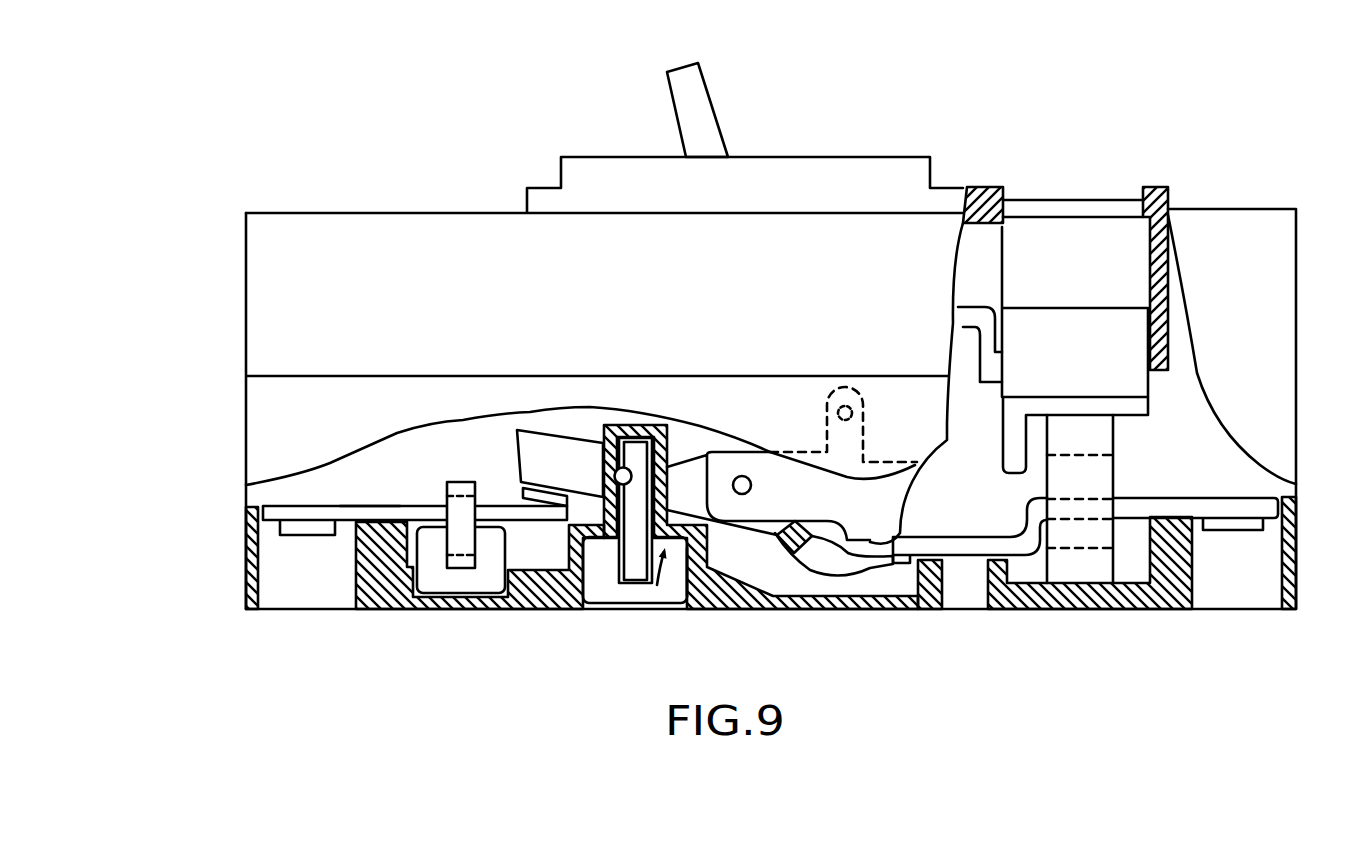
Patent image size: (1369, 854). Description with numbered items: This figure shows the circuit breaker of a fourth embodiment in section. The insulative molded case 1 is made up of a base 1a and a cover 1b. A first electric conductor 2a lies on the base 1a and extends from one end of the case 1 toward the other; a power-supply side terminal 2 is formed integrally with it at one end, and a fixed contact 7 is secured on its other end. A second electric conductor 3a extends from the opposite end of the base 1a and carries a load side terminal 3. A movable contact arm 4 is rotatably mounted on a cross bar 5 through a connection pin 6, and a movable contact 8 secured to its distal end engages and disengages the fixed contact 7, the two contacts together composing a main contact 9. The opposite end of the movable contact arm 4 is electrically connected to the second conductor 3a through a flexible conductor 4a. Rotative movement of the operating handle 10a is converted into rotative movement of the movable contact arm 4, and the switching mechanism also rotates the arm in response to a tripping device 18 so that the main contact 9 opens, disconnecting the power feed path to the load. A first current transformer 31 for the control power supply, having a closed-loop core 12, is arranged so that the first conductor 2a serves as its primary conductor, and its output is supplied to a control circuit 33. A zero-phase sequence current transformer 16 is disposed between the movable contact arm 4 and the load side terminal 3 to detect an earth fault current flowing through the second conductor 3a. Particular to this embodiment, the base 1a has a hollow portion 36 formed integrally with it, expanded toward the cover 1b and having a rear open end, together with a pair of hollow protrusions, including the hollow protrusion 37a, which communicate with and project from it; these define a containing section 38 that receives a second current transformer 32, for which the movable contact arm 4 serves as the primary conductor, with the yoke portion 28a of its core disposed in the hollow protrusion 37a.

The molded case 1 is at (270, 213).
The base 1a is at (363, 609).
The cover 1b is at (244, 268).
The power-supply side terminal 2 is at (268, 505).
The first electric conductor 2a is at (368, 505).
The load side terminal 3 is at (1257, 497).
The second electric conductor 3a is at (1010, 537).
The movable contact arm 4 is at (587, 438).
The flexible conductor 4a is at (845, 568).
The cross bar 5 is at (722, 445).
The connection pin 6 is at (753, 478).
The fixed contact 7 is at (517, 490).
The movable contact 8 is at (517, 485).
The main contact 9 is at (497, 473).
The operating handle 10a is at (705, 95).
The core 12 is at (447, 488).
The zero-phase sequence current transformer 16 is at (1117, 542).
The tripping device 18 is at (1152, 385).
The yoke portion 28a is at (637, 452).
The first current transformer 31 is at (450, 585).
The second current transformer 32 is at (600, 597).
The control circuit 33 is at (1100, 215).
The hollow portion 36 is at (683, 582).
The hollow protrusion 37a is at (610, 469).
The containing section 38 is at (657, 597).